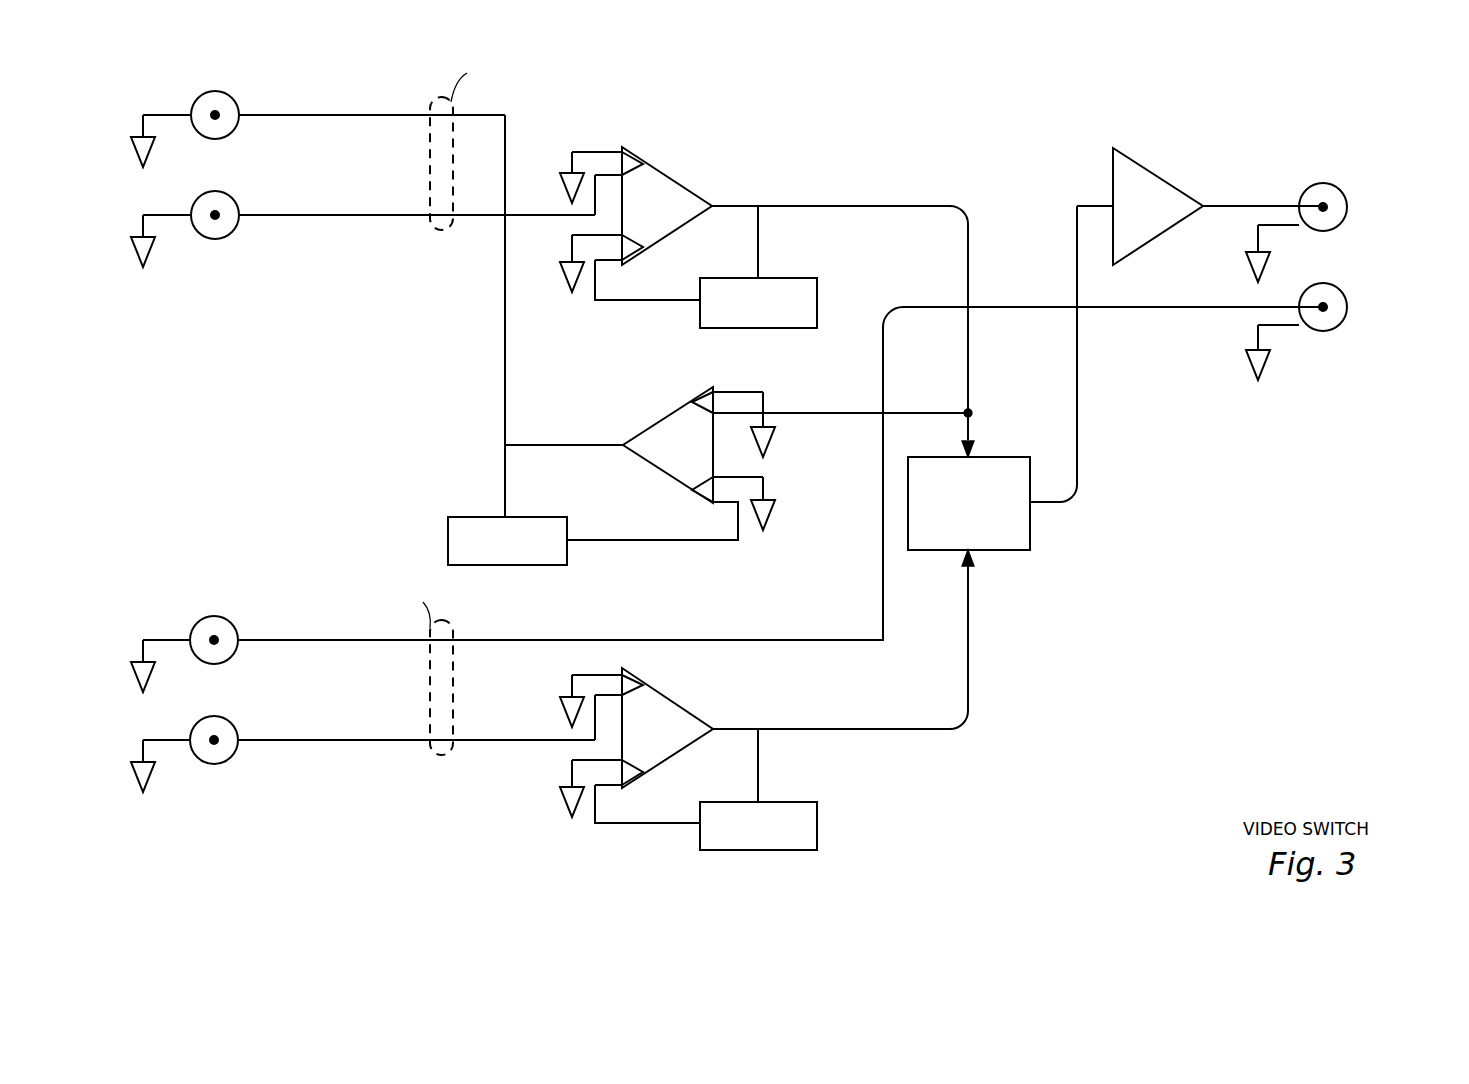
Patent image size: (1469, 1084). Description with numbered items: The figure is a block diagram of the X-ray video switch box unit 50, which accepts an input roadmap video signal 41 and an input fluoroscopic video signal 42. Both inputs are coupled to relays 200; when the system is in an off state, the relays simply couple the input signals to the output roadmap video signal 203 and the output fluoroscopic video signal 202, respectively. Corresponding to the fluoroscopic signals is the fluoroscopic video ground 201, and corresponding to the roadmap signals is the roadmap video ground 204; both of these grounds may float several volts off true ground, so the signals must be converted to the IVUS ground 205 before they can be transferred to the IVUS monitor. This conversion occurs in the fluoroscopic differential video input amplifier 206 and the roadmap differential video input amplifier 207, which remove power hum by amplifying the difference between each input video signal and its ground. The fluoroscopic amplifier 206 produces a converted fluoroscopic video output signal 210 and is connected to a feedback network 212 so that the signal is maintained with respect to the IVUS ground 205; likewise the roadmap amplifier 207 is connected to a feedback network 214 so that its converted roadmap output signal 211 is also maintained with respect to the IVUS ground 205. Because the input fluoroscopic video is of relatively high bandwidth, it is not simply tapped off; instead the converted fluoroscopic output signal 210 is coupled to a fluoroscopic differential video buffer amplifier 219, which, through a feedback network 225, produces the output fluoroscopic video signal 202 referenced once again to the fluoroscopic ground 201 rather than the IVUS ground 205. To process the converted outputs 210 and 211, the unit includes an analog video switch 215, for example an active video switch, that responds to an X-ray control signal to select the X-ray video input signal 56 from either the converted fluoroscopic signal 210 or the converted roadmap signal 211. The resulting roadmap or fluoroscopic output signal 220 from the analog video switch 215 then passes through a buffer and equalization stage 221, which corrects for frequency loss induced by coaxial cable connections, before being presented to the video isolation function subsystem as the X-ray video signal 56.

The input roadmap video signal 41 is at (407, 742).
The input fluoroscopic video signal 42 is at (284, 217).
The X-ray video switch box unit 50 is at (1043, 718).
The X-ray video input signal 56 is at (1228, 205).
The relays 200 is at (445, 233).
The fluoroscopic video ground 201 is at (158, 113).
The output fluoroscopic video signal 202 is at (413, 113).
The output roadmap video signal 203 is at (547, 640).
The roadmap video ground 204 is at (158, 638).
The IVUS ground 205 is at (572, 240).
The fluoroscopic differential video input amplifier 206 is at (685, 180).
The roadmap differential video input amplifier 207 is at (695, 712).
The converted fluoroscopic video output signal 210 is at (858, 203).
The converted roadmap output signal 211 is at (968, 665).
The feedback network 212 is at (778, 277).
The feedback network 214 is at (777, 852).
The analog video switch 215 is at (1010, 551).
The fluoroscopic differential video buffer amplifier 219 is at (652, 423).
The output signal 220 is at (1078, 363).
The buffer and equalization stage 221 is at (1110, 162).
The feedback network 225 is at (470, 512).